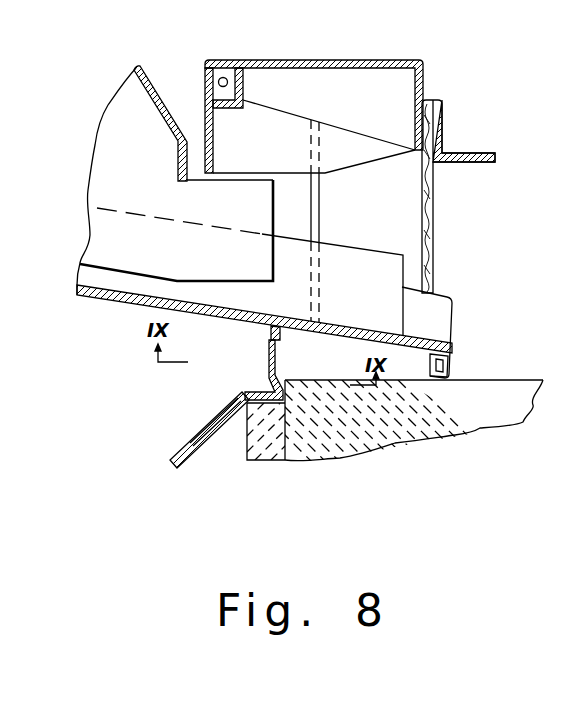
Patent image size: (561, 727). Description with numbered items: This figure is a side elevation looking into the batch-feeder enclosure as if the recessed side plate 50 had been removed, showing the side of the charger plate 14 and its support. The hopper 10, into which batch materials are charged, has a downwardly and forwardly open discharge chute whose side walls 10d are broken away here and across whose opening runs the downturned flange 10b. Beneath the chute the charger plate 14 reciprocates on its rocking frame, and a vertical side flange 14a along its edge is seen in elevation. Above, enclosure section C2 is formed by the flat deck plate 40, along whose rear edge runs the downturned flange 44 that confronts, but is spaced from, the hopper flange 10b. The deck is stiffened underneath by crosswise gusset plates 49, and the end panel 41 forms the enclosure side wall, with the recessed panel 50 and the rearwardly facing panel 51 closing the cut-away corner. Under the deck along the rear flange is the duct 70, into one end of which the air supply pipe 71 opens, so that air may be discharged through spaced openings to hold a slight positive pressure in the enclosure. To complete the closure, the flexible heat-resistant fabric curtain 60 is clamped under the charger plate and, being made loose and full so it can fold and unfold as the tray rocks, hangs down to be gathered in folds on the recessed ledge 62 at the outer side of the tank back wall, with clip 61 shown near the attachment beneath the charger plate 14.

The hopper 10 is at (176, 230).
The downturned flange 10b is at (177, 163).
The side wall 10d is at (100, 142).
The charger plate 14 is at (420, 335).
The vertical side flange 14a is at (332, 284).
The deck plate 40 is at (380, 58).
The end panel 41 is at (314, 171).
The downturned rear flange 44 is at (202, 108).
The gusset plate 49 is at (300, 118).
The recessed partial end plate panel 50 is at (295, 175).
The rearwardly facing panel 51 is at (321, 228).
The fabric curtain 60 is at (263, 375).
The clip 61 is at (267, 335).
The recessed ledge 62 is at (257, 415).
The duct 70 is at (244, 89).
The air supply pipe 71 is at (227, 77).